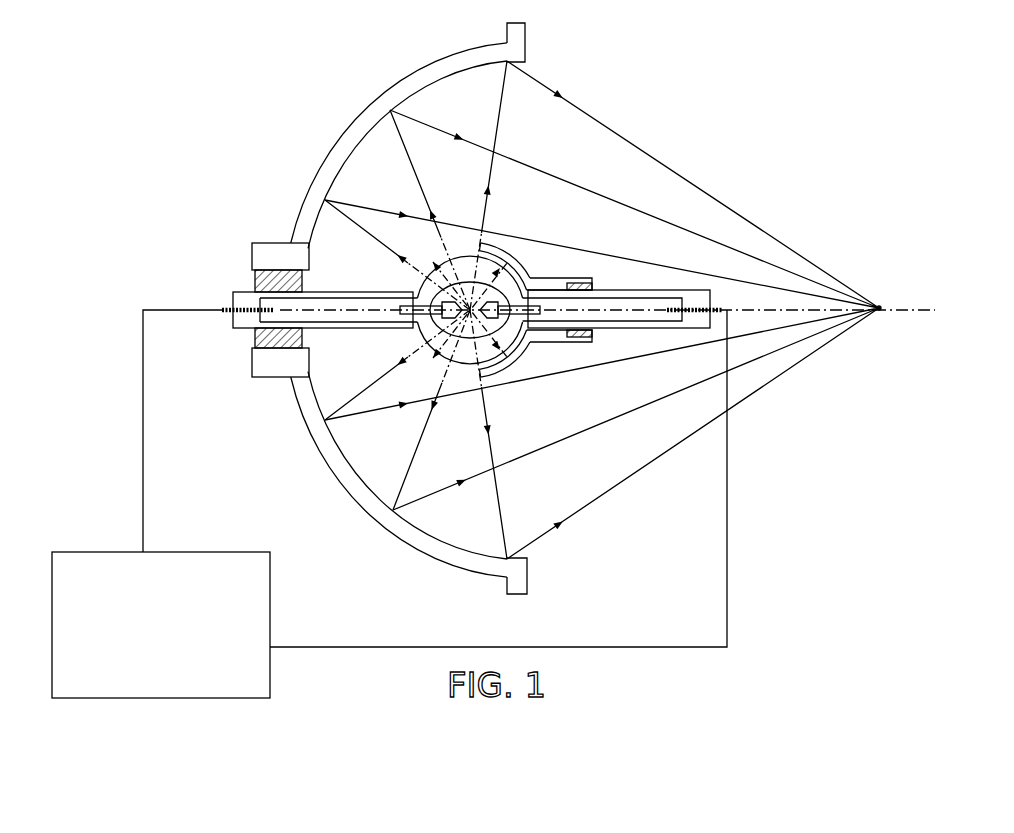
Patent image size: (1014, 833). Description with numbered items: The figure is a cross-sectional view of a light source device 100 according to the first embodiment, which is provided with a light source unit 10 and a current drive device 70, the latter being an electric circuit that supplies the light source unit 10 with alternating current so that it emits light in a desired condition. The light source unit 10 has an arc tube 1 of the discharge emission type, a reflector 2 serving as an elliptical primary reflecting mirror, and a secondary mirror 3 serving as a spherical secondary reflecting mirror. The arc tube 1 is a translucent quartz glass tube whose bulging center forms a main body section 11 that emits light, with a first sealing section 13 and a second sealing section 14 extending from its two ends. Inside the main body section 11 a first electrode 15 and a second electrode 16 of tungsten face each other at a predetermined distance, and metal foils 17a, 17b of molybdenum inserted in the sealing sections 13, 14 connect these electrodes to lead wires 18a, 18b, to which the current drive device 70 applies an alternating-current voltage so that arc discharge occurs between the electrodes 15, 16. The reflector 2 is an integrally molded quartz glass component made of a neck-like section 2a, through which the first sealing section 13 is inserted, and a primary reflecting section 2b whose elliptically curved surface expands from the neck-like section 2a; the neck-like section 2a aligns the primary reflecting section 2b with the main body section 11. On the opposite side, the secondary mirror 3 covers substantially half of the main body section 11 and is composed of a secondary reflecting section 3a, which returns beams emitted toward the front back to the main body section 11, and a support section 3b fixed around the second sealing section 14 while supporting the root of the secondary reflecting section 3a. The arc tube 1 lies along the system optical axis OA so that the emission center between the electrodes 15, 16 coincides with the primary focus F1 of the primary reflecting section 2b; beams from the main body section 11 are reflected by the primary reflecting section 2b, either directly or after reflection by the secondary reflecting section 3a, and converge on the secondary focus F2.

The light source device 100 is at (828, 45).
The light source unit 10 is at (613, 88).
The arc tube 1 is at (610, 238).
The reflector 2 is at (377, 103).
The neck-like section 2a is at (272, 368).
The primary reflecting section 2b is at (367, 508).
The secondary mirror 3 is at (535, 342).
The secondary reflecting section 3a is at (495, 250).
The support section 3b is at (556, 336).
The main body section 11 is at (420, 288).
The first sealing section 13 is at (309, 366).
The second sealing section 14 is at (645, 329).
The first electrode 15 is at (395, 316).
The second electrode 16 is at (540, 297).
The metal foil 17a is at (338, 300).
The metal foil 17b is at (632, 302).
The lead wire 18a is at (228, 304).
The lead wire 18b is at (695, 306).
The current drive device 70 is at (185, 551).
The primary focus F1 is at (455, 318).
The secondary focus F2 is at (879, 305).
The system optical axis OA is at (914, 312).